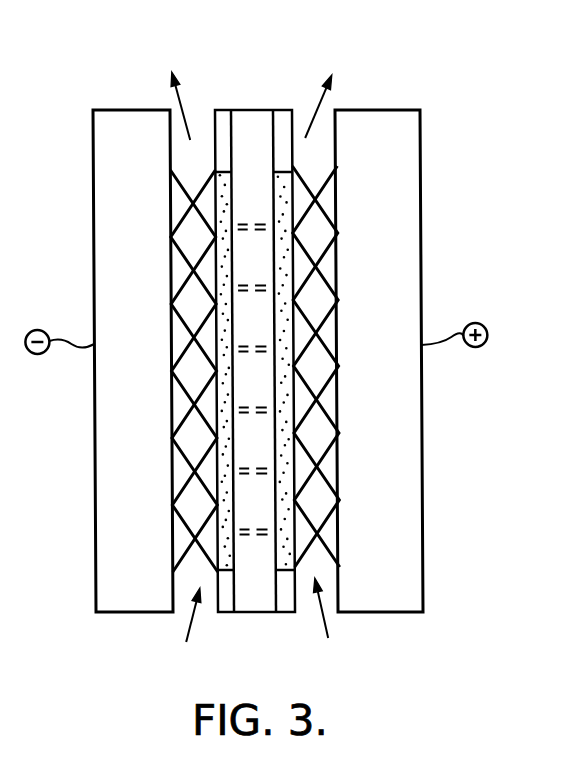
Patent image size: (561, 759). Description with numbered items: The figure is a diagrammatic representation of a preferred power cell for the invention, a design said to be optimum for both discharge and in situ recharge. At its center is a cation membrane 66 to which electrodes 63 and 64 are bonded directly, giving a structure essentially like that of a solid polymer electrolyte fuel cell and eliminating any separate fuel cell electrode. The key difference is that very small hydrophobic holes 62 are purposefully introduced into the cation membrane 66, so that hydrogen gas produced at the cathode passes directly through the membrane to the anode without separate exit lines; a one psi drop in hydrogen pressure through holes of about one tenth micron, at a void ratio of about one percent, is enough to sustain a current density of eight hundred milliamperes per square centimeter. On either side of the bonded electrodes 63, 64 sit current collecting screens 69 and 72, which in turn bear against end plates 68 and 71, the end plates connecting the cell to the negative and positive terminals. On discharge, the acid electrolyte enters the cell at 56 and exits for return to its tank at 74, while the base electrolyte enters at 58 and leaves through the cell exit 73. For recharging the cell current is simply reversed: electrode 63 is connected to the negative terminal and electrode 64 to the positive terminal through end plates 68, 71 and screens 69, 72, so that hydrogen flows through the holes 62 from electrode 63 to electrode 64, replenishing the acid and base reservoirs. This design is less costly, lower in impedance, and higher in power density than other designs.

The acid electrolyte cell entrance 56 is at (330, 625).
The base electrolyte cell entrance 58 is at (191, 632).
The hydrophobic holes 62 is at (255, 540).
The electrode 63 is at (223, 108).
The electrode 64 is at (284, 108).
The cation membrane 66 is at (253, 122).
The end plate 68 is at (122, 387).
The current collecting screen 69 is at (203, 490).
The end plate 71 is at (393, 390).
The current collecting screen 72 is at (325, 517).
The base electrolyte cell exit 73 is at (180, 98).
The acid electrolyte cell exit 74 is at (325, 100).